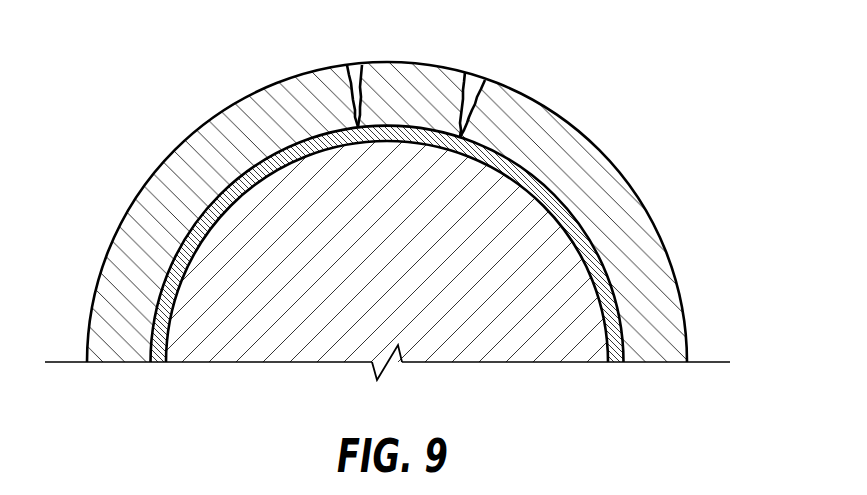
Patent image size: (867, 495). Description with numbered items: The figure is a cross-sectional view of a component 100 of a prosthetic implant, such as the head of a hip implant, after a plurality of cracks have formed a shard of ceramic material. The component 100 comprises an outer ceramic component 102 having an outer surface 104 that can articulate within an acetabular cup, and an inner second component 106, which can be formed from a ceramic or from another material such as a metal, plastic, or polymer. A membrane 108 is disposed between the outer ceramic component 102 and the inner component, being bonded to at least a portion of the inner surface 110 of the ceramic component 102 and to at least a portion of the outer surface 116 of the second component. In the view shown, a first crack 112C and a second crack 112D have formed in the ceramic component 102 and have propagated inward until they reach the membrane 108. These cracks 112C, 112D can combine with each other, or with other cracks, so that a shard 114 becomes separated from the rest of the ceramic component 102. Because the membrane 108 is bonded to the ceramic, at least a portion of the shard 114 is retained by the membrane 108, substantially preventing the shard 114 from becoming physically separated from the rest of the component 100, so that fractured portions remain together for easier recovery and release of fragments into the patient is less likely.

The component 100 is at (387, 214).
The ceramic component 102 is at (387, 193).
The outer surface 104 is at (213, 117).
The second component 106 is at (523, 340).
The membrane 108 is at (583, 233).
The inner surface 110 is at (412, 244).
The first crack 112C is at (346, 82).
The second crack 112D is at (481, 98).
The shard 114 is at (412, 86).
The outer surface of the second component 116 is at (190, 253).